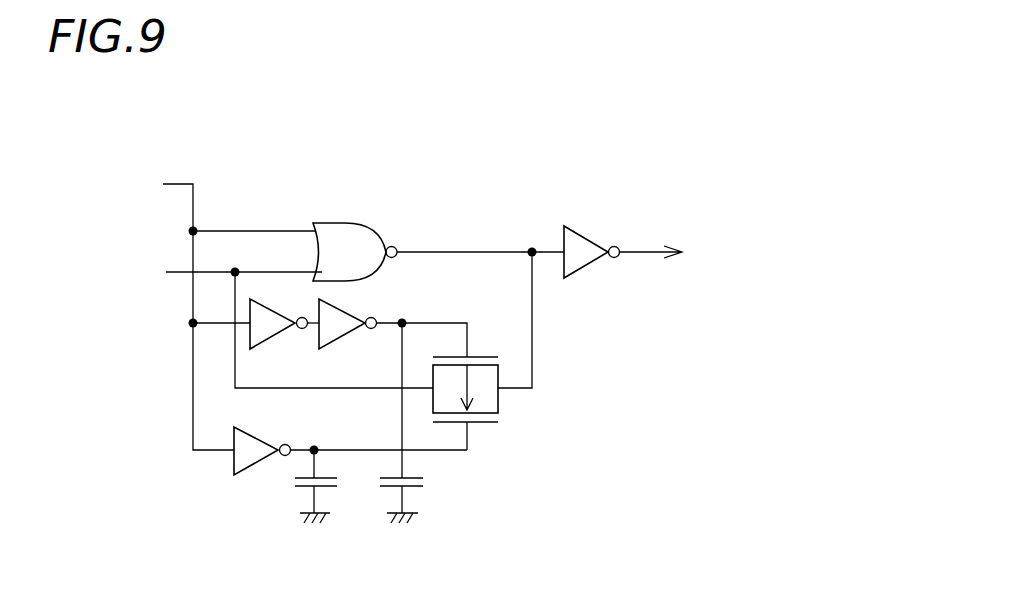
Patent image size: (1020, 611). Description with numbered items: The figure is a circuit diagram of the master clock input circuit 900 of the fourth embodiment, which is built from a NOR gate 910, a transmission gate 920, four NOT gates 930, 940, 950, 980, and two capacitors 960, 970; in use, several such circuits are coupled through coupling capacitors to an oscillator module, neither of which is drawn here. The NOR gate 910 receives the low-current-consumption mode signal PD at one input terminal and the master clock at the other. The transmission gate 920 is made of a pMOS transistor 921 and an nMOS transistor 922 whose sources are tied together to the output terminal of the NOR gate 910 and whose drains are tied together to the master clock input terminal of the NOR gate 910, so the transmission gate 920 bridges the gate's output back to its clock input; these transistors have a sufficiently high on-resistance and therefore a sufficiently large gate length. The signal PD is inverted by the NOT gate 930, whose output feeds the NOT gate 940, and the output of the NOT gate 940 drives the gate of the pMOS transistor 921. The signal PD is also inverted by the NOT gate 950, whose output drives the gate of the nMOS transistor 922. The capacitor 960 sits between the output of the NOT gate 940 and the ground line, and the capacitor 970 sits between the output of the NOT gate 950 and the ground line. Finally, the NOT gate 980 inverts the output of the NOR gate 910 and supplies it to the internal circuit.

The master clock input circuit 900 is at (582, 100).
The NOR gate 910 is at (378, 225).
The transmission gate 920 is at (535, 414).
The pMOS transistor 921 is at (499, 371).
The nMOS transistor 922 is at (499, 404).
The NOT gate 930 is at (280, 336).
The NOT gate 940 is at (350, 336).
The NOT gate 950 is at (258, 462).
The capacitor 960 is at (425, 482).
The capacitor 970 is at (338, 482).
The NOT gate 980 is at (588, 238).